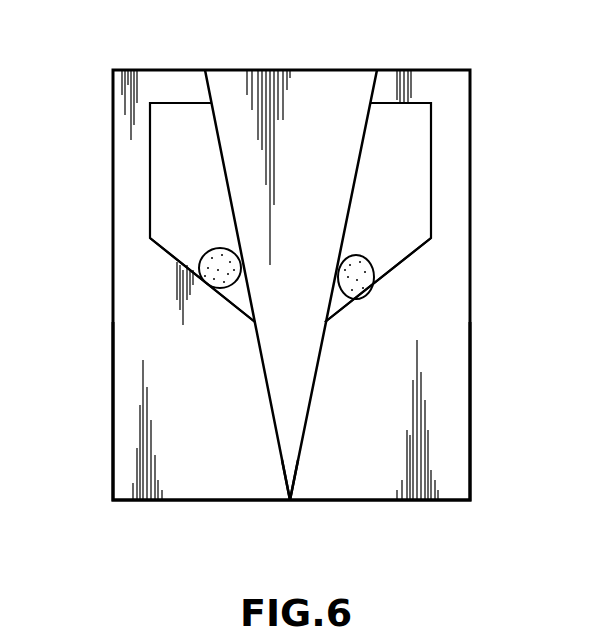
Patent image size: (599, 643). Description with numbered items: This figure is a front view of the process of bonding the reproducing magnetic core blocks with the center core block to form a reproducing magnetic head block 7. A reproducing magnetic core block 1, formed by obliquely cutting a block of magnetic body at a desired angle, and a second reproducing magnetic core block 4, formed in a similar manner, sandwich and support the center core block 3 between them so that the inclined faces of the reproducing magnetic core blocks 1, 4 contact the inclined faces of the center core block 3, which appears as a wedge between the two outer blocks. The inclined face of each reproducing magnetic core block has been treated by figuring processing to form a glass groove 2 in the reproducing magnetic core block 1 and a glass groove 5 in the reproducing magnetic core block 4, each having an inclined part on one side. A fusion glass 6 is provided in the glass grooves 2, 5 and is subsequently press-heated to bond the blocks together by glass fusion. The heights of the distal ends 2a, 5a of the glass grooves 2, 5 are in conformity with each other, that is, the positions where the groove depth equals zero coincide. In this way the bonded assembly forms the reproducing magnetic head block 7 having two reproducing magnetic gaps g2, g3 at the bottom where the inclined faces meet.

The reproducing magnetic core block 1 is at (188, 488).
The glass groove 2 is at (155, 156).
The distal end of glass groove 2a is at (256, 325).
The center core block 3 is at (308, 70).
The reproducing magnetic core block 4 is at (380, 488).
The glass groove 5 is at (425, 180).
The distal end of glass groove 5a is at (318, 322).
The fusion glass 6 is at (190, 257).
The reproducing magnetic head block 7 is at (487, 130).
The reproducing magnetic gap g2 is at (277, 455).
The reproducing magnetic gap g3 is at (301, 455).